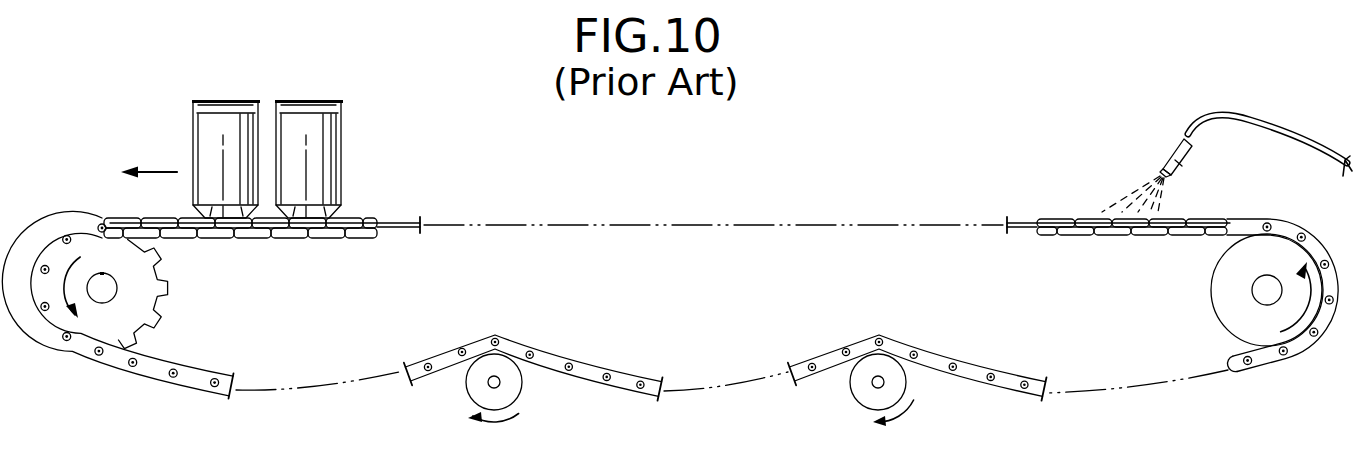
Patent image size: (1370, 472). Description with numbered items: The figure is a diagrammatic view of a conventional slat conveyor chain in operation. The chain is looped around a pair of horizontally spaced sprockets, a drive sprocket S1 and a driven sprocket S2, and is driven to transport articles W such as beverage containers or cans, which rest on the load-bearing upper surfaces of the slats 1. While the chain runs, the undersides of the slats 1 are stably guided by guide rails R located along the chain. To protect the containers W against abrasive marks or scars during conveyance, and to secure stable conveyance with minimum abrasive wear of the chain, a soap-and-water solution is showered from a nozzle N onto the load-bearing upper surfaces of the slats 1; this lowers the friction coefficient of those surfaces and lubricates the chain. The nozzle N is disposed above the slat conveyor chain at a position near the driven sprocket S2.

The slat 1 is at (185, 220).
The article W is at (331, 141).
The guide rail R is at (403, 231).
The drive sprocket S1 is at (95, 326).
The driven sprocket S2 is at (1280, 248).
The nozzle N is at (1172, 139).